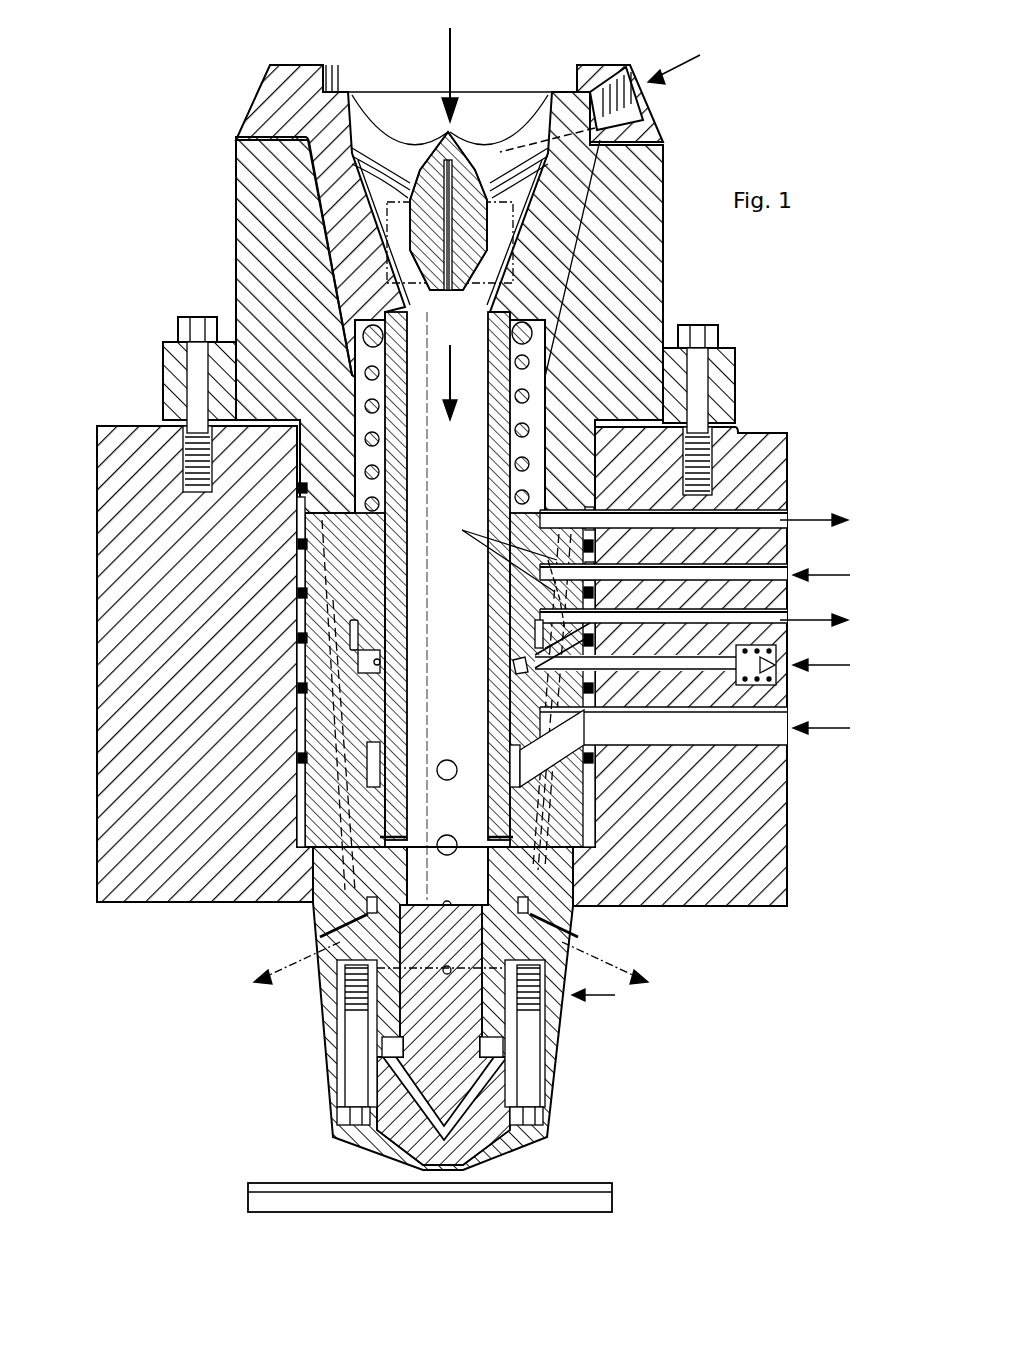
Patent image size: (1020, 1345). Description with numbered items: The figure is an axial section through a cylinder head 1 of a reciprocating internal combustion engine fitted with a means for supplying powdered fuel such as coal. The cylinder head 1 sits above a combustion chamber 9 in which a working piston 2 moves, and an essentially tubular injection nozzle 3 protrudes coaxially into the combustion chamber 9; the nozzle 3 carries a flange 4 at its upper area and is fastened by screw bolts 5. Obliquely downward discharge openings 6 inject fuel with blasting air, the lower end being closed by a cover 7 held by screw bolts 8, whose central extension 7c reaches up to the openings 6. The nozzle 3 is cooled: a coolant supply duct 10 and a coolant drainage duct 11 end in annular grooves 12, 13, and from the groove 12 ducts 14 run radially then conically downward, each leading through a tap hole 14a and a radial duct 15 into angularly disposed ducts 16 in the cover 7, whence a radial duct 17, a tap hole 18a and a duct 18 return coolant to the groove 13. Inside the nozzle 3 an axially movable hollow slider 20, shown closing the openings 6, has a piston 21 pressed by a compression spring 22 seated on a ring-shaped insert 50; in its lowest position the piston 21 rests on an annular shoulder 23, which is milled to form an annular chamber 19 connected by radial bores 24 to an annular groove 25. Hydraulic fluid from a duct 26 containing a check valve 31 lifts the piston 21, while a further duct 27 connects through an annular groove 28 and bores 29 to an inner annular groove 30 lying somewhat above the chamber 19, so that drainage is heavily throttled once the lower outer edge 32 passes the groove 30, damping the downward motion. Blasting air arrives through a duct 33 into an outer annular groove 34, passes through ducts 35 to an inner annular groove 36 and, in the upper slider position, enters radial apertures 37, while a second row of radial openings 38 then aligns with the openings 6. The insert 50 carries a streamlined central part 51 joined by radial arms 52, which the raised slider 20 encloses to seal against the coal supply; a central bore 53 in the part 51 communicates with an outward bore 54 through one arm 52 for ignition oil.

The cylinder head 1 is at (695, 906).
The working piston 2 is at (588, 1185).
The injection nozzle 3 is at (471, 1008).
The flange 4 is at (736, 360).
The screw bolts 5 is at (197, 325).
The discharge openings 6 is at (320, 937).
The cover 7 is at (395, 1140).
The central extension 7c is at (458, 893).
The screw bolts 8 is at (340, 1112).
The combustion chamber 9 is at (699, 1050).
The coolant supply duct 10 is at (715, 580).
The coolant drainage duct 11 is at (745, 525).
The annular groove 12 is at (597, 565).
The annular groove 13 is at (600, 505).
The ducts 14 is at (563, 812).
The tap hole 14a is at (542, 1045).
The radial duct 15 is at (480, 1050).
The angularly disposed ducts 16 is at (470, 1112).
The radial duct 17 is at (400, 1045).
The duct 18 is at (335, 822).
The tap hole 18a is at (345, 1045).
The annular chamber 19 is at (380, 660).
The hollow slider 20 is at (387, 700).
The piston 21 is at (387, 580).
The compression spring 22 is at (530, 400).
The annular shoulder 23 is at (515, 668).
The radial bores 24 is at (550, 690).
The annular groove 25 is at (597, 688).
The duct 26 is at (694, 665).
The further duct 27 is at (693, 622).
The annular groove 28 is at (592, 612).
The bores 29 is at (548, 635).
The annular groove 30 is at (538, 625).
The check valve 31 is at (776, 674).
The lower outer edge 32 is at (540, 650).
The duct 33 is at (710, 746).
The outer annular groove 34 is at (597, 727).
The ducts 35 is at (588, 768).
The inner annular groove 36 is at (512, 752).
The radial apertures 37 is at (444, 835).
The radial openings 38 is at (447, 966).
The ring-shaped insert 50 is at (578, 222).
The central part 51 is at (480, 200).
The radial arms 52 is at (398, 150).
The bore 53 is at (452, 243).
The bore 54 is at (498, 150).